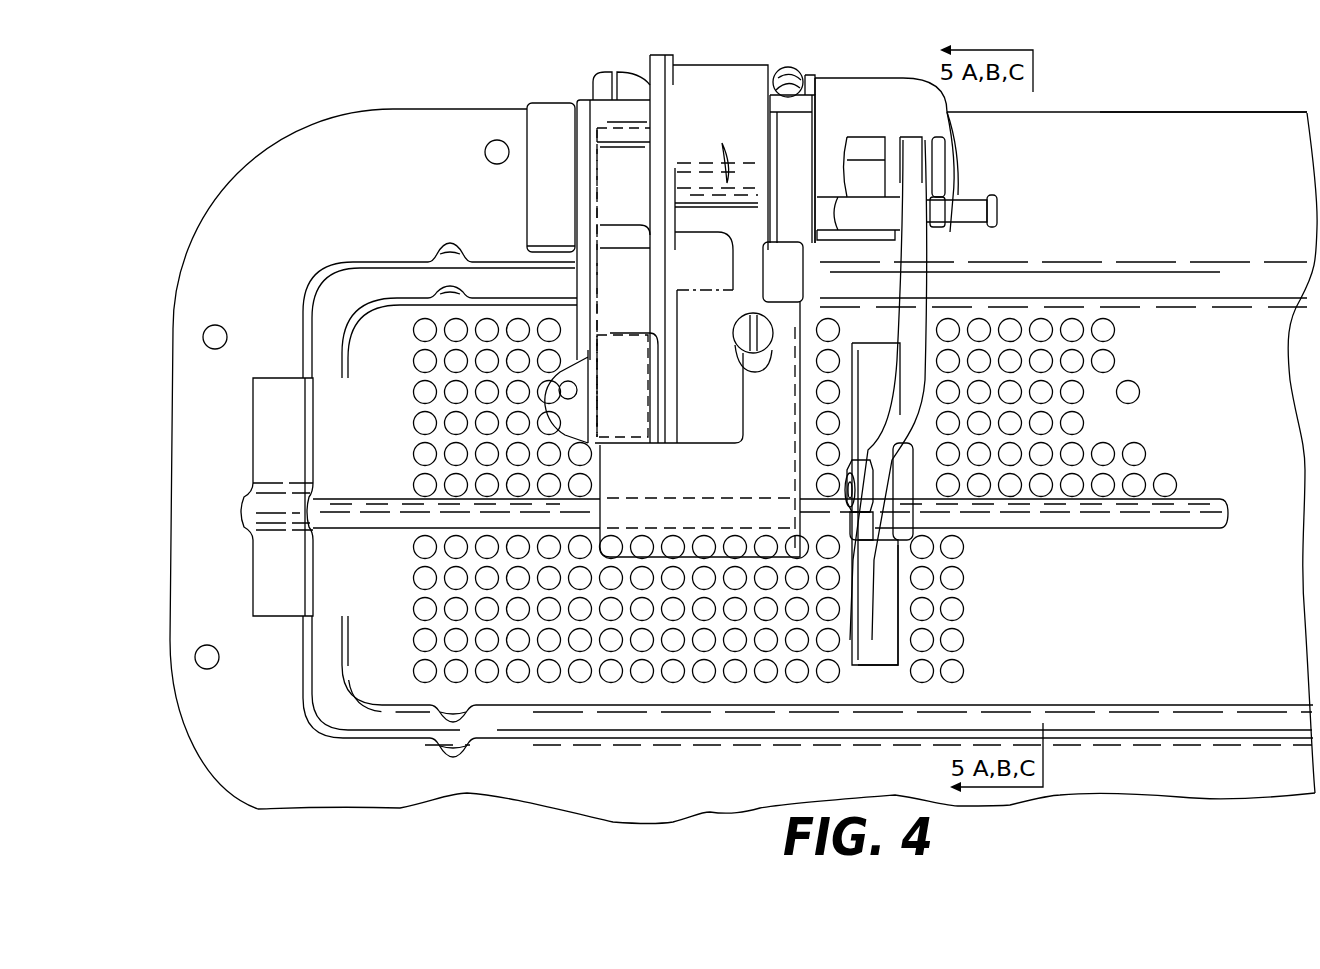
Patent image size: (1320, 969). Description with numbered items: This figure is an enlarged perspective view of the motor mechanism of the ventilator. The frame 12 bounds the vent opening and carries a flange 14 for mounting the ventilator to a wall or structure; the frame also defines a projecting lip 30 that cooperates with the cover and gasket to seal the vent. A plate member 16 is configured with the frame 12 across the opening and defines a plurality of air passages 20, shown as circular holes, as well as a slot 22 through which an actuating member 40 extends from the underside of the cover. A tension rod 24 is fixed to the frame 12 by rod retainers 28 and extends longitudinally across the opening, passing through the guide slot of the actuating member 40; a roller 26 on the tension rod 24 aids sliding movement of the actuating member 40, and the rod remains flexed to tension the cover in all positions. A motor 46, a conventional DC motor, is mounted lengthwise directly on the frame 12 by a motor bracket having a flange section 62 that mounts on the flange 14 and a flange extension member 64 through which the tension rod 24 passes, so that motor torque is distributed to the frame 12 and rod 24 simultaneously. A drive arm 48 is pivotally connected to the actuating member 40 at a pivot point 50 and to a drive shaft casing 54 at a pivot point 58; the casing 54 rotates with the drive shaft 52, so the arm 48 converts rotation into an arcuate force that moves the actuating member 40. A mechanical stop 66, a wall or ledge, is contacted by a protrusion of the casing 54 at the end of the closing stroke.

The frame 12 is at (273, 143).
The flange 14 is at (1192, 118).
The plate member 16 is at (358, 692).
The air passages 20 is at (517, 678).
The slot 22 is at (863, 660).
The tension rod 24 is at (1068, 517).
The roller 26 is at (847, 525).
The rod retainers 28 is at (262, 434).
The projecting lip 30 is at (387, 277).
The actuating member 40 is at (870, 595).
The motor 46 is at (728, 62).
The drive arm 48 is at (923, 292).
The pivot point 50 is at (847, 493).
The drive shaft 52 is at (955, 148).
The drive shaft casing 54 is at (878, 90).
The pivot point 58 is at (973, 193).
The flange section 62 is at (550, 117).
The flange extension member 64 is at (698, 343).
The mechanical stop 66 is at (800, 80).